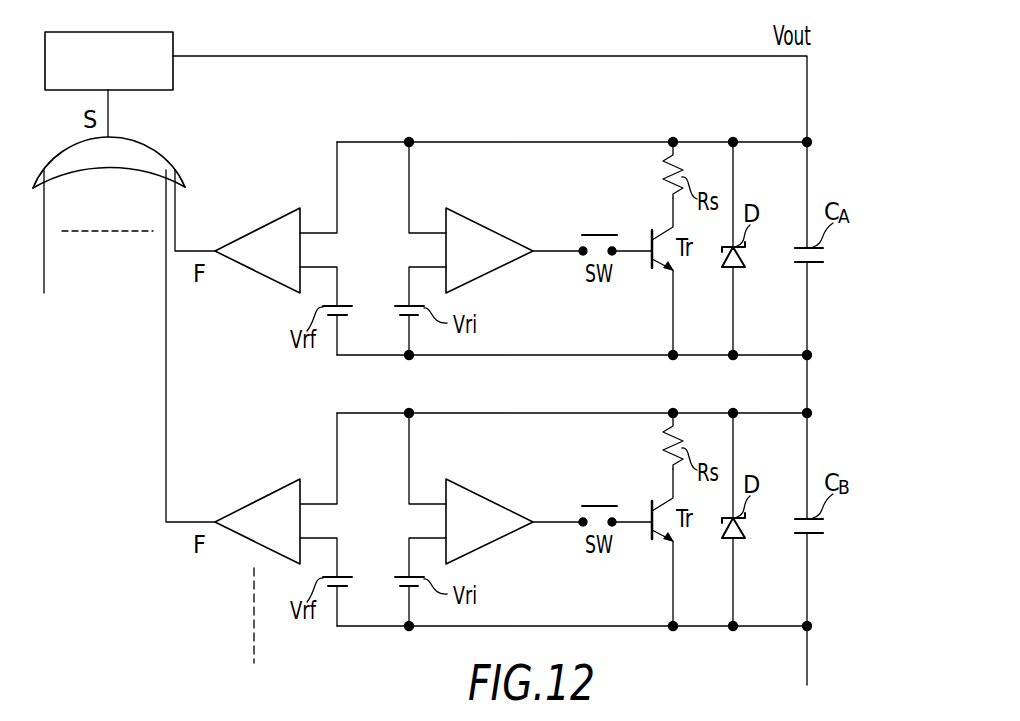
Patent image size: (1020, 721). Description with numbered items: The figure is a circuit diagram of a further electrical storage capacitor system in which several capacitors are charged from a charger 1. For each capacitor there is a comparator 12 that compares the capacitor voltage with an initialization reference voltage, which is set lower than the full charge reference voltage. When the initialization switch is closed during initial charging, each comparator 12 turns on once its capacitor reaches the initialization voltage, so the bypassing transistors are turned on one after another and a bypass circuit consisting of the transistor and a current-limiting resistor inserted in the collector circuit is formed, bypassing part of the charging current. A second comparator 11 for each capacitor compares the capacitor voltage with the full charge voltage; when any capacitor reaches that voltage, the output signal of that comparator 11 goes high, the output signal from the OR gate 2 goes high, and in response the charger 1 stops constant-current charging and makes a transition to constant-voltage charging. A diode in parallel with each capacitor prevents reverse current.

The charger 1 is at (173, 35).
The OR gate 2 is at (153, 150).
The comparator 11 is at (280, 216).
The comparator 12 is at (482, 220).